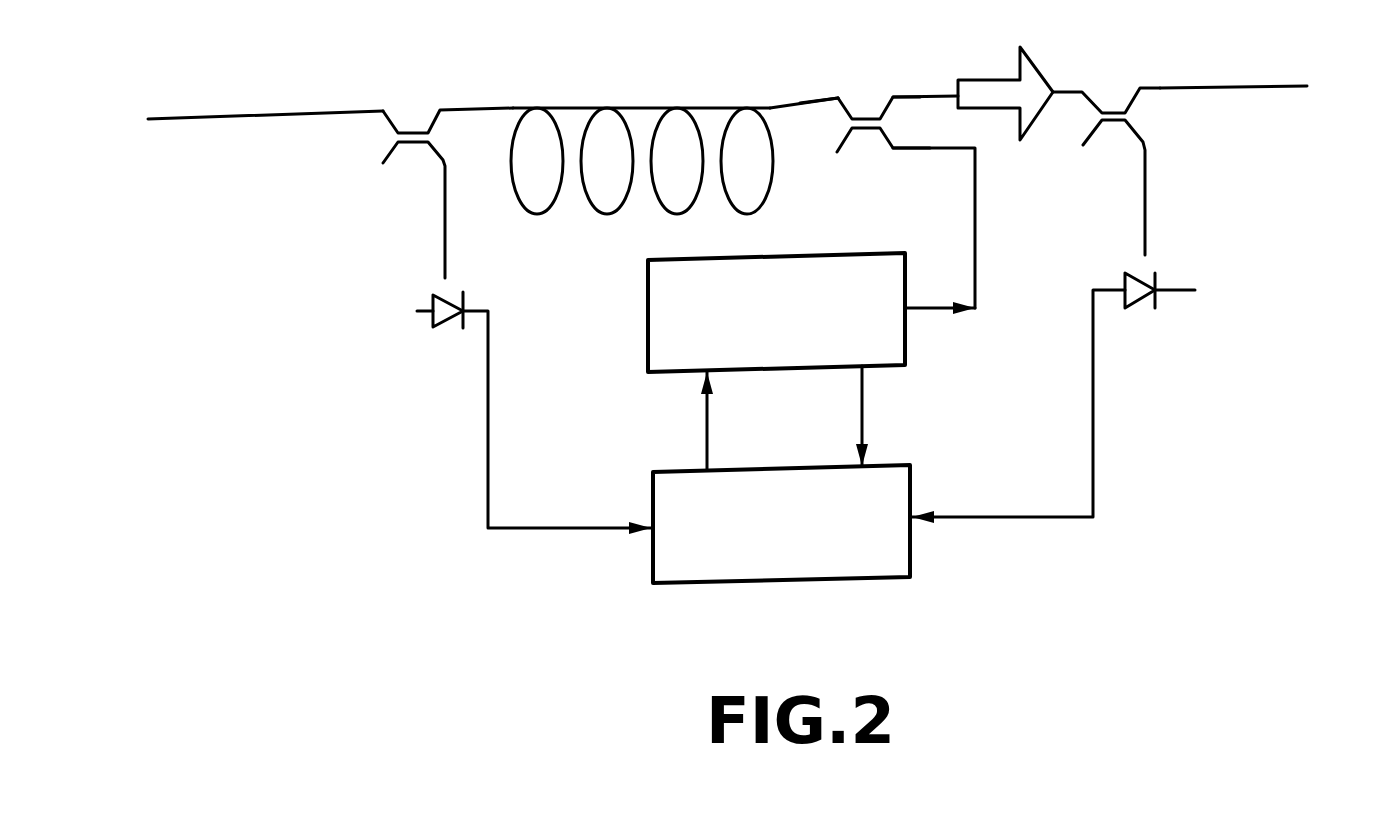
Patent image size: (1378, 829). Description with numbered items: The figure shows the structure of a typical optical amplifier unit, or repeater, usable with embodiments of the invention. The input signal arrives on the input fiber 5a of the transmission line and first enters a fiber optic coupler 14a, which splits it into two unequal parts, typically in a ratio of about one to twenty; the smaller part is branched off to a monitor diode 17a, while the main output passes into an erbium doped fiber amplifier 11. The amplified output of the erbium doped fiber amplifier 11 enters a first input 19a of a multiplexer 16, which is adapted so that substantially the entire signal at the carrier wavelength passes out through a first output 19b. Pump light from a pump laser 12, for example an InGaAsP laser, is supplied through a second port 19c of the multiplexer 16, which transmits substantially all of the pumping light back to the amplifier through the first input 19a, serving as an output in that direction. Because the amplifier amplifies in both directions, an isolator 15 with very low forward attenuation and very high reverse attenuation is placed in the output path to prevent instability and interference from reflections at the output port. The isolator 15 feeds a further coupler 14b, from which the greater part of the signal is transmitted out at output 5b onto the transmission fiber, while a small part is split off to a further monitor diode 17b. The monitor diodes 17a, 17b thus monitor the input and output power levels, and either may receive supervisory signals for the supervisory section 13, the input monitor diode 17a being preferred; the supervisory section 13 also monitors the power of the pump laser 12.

The input fiber 5a is at (170, 115).
The output 5b is at (1287, 82).
The fiber optic coupler 14a is at (415, 123).
The further coupler 14b is at (1113, 93).
The erbium doped fiber amplifier 11 is at (642, 100).
The multiplexer 16 is at (870, 108).
The first input 19a is at (838, 98).
The first output 19b is at (897, 90).
The second port 19c is at (868, 142).
The isolator 15 is at (997, 72).
The pump laser 12 is at (811, 361).
The supervisory section 13 is at (781, 474).
The monitor diode 17a is at (450, 322).
The further monitor diode 17b is at (1138, 303).